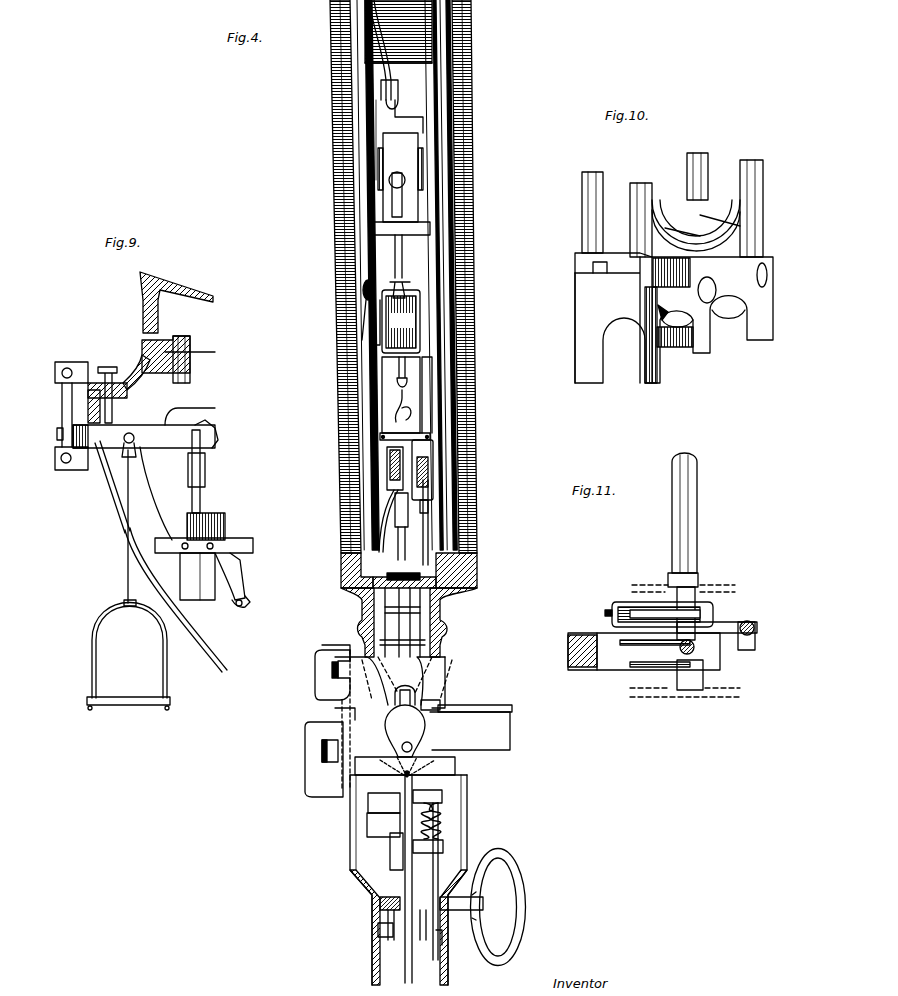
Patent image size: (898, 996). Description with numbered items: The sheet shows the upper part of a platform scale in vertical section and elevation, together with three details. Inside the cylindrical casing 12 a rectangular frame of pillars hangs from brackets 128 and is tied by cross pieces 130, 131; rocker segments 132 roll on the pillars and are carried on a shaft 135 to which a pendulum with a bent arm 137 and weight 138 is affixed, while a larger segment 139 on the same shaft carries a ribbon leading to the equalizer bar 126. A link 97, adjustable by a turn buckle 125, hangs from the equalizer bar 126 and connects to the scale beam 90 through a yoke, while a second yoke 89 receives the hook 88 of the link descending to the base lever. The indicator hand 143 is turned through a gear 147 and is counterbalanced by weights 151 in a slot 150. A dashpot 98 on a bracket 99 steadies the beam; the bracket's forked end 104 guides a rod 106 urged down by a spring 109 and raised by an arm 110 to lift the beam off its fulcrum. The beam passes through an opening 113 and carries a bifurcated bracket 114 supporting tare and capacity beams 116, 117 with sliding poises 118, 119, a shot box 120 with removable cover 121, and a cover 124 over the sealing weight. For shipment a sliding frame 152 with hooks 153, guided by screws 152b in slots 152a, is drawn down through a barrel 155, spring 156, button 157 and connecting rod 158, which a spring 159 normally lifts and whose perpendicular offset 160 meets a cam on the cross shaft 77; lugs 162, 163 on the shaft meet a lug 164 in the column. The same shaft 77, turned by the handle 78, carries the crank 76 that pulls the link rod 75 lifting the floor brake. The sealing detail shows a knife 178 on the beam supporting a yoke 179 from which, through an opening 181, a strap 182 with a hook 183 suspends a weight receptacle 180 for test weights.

In FIG. 4, the casing 12 is at (455, 18).
In FIG. 4, the link rod 75 is at (440, 950).
In FIG. 11, the link rod 75 is at (606, 612).
In FIG. 4, the crank 76 is at (455, 880).
In FIG. 11, the crank 76 is at (655, 595).
In FIG. 4, the cross shaft 77 is at (455, 905).
In FIG. 11, the cross shaft 77 is at (700, 592).
In FIG. 4, the handle 78 is at (527, 914).
In FIG. 11, the handle 78 is at (695, 473).
In FIG. 4, the hook 88 is at (385, 805).
In FIG. 4, the yoke 89 is at (400, 768).
In FIG. 4, the scale beam 90 is at (438, 713).
In FIG. 4, the link 97 is at (395, 425).
In FIG. 4, the dashpot 98 is at (448, 668).
In FIG. 4, the bracket 99 is at (385, 828).
In FIG. 4, the forked end 104 is at (442, 794).
In FIG. 11, the rod 106 is at (698, 662).
In FIG. 4, the spring 109 is at (395, 845).
In FIG. 11, the arm 110 is at (620, 670).
In FIG. 4, the opening 113 is at (416, 690).
In FIG. 4, the bifurcated bracket 114 is at (350, 712).
In FIG. 4, the tare beam 116 is at (332, 660).
In FIG. 4, the capacity increasing beam 117 is at (322, 748).
In FIG. 4, the sliding poise 118 is at (333, 640).
In FIG. 4, the sliding poise 119 is at (310, 790).
In FIG. 4, the shot box 120 is at (510, 722).
In FIG. 4, the removable cover 121 is at (490, 703).
In FIG. 4, the cover 124 is at (405, 731).
In FIG. 4, the turn buckle 125 is at (408, 512).
In FIG. 4, the equalizer bar 126 is at (395, 395).
In FIG. 4, the bracket 128 is at (336, 66).
In FIG. 4, the cross piece 130 is at (390, 472).
In FIG. 10, the cross piece 130 is at (735, 330).
In FIG. 4, the cross piece 131 is at (388, 94).
In FIG. 4, the rocker segment 132 is at (378, 200).
In FIG. 4, the shaft 135 is at (432, 228).
In FIG. 4, the bent arm 137 is at (404, 262).
In FIG. 4, the weight 138 is at (401, 321).
In FIG. 4, the larger segment 139 is at (405, 196).
In FIG. 4, the indicator hand 143 is at (366, 140).
In FIG. 4, the gear 147 is at (363, 286).
In FIG. 4, the slot 150 is at (374, 322).
In FIG. 4, the adjustable weight 151 is at (362, 300).
In FIG. 4, the sliding frame 152 is at (433, 388).
In FIG. 10, the sliding frame 152 is at (778, 345).
In FIG. 10, the slot 152a is at (660, 372).
In FIG. 10, the screw 152b is at (672, 340).
In FIG. 10, the hook 153 is at (590, 265).
In FIG. 4, the barrel 155 is at (430, 488).
In FIG. 4, the spring 156 is at (430, 475).
In FIG. 4, the button 157 is at (428, 460).
In FIG. 4, the connecting rod 158 is at (430, 536).
In FIG. 11, the connecting rod 158 is at (748, 620).
In FIG. 4, the spring 159 is at (440, 825).
In FIG. 4, the perpendicular offset 160 is at (429, 933).
In FIG. 4, the lug 162 is at (385, 902).
In FIG. 4, the lug 163 is at (378, 928).
In FIG. 4, the lug 164 is at (392, 933).
In FIG. 9, the knife 178 is at (108, 460).
In FIG. 9, the yoke 179 is at (185, 468).
In FIG. 9, the weight receptacle 180 is at (160, 706).
In FIG. 9, the opening 181 is at (152, 561).
In FIG. 9, the strap 182 is at (185, 503).
In FIG. 9, the hook 183 is at (185, 488).